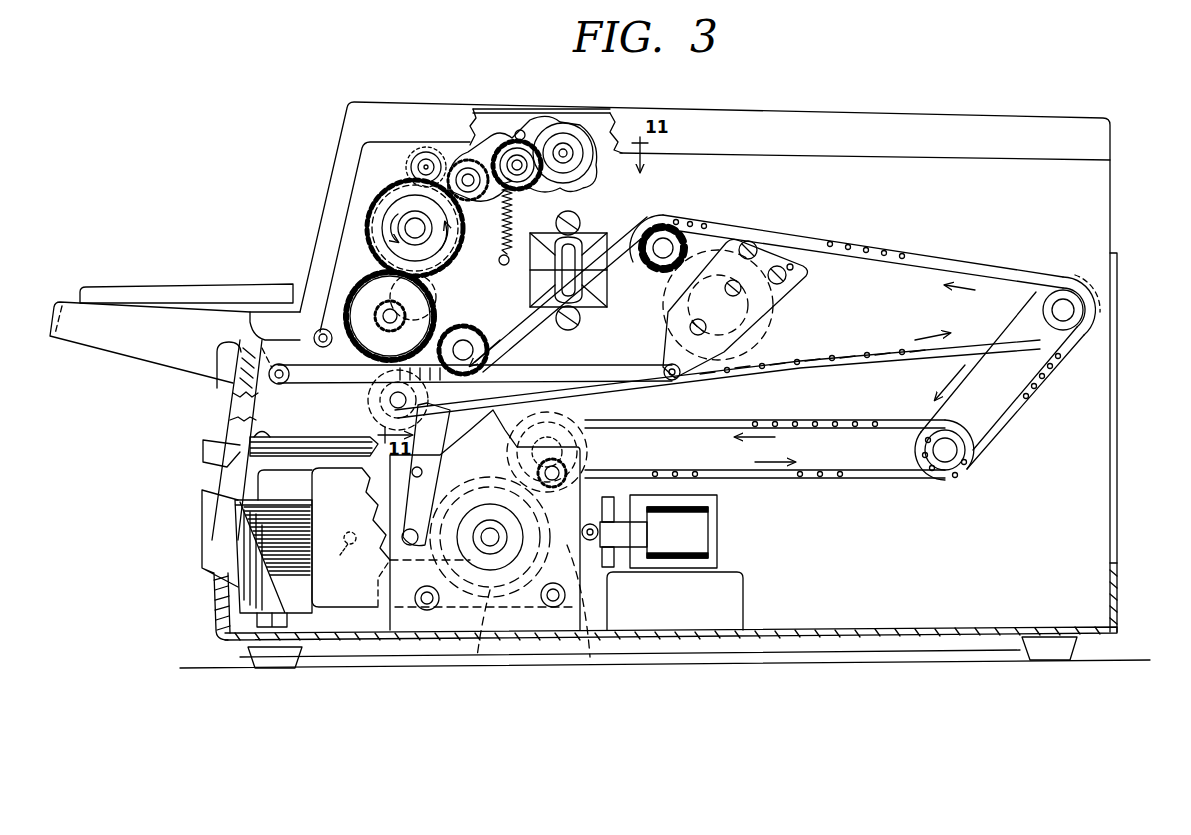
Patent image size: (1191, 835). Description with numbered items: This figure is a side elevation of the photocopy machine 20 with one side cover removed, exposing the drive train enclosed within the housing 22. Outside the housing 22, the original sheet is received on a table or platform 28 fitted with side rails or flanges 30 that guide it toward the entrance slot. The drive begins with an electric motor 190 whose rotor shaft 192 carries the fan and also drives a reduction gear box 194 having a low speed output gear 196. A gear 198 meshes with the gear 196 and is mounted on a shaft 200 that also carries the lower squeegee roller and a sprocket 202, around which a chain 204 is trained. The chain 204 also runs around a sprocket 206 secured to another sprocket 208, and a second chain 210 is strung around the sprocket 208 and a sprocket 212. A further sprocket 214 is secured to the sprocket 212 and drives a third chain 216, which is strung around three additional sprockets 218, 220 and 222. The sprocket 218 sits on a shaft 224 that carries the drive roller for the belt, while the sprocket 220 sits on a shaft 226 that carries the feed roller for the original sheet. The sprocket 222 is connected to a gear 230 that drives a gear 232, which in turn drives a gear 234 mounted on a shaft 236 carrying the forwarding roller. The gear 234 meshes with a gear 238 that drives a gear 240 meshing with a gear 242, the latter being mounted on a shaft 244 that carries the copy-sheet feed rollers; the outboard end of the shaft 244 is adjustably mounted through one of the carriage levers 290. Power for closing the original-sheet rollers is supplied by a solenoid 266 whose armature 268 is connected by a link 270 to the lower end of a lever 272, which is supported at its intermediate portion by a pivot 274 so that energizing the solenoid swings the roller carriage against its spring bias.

The photocopy machine 20 is at (242, 141).
The housing 22 is at (340, 123).
The table or platform 28 is at (163, 302).
The side rails or flanges 30 is at (228, 290).
The electric motor 190 is at (308, 523).
The rotor shaft 192 is at (339, 554).
The reduction gear box 194 is at (340, 602).
The low speed output gear 196 is at (486, 650).
The gear 198 is at (590, 442).
The shaft 200 is at (590, 460).
The sprocket 202 is at (474, 390).
The chain 204 is at (805, 478).
The sprocket 206 is at (955, 432).
The sprocket 208 is at (935, 477).
The second chain 210 is at (1040, 372).
The sprocket 212 is at (1072, 292).
The sprocket 214 is at (1078, 315).
The third chain 216 is at (950, 266).
The sprocket 218 is at (589, 270).
The sprocket 220 is at (477, 333).
The sprocket 222 is at (380, 398).
The shaft 224 is at (668, 244).
The shaft 226 is at (520, 345).
The gear 230 is at (422, 311).
The gear 232 is at (414, 313).
The gear 234 is at (388, 188).
The shaft 236 is at (402, 228).
The gear 238 is at (428, 148).
The gear 240 is at (510, 150).
The gear 242 is at (563, 145).
The shaft 244 is at (575, 150).
The solenoid 266 is at (710, 528).
The armature 268 is at (675, 601).
The link 270 is at (578, 585).
The lever 272 is at (395, 492).
The pivot 274 is at (424, 472).
The lever 290 is at (470, 160).